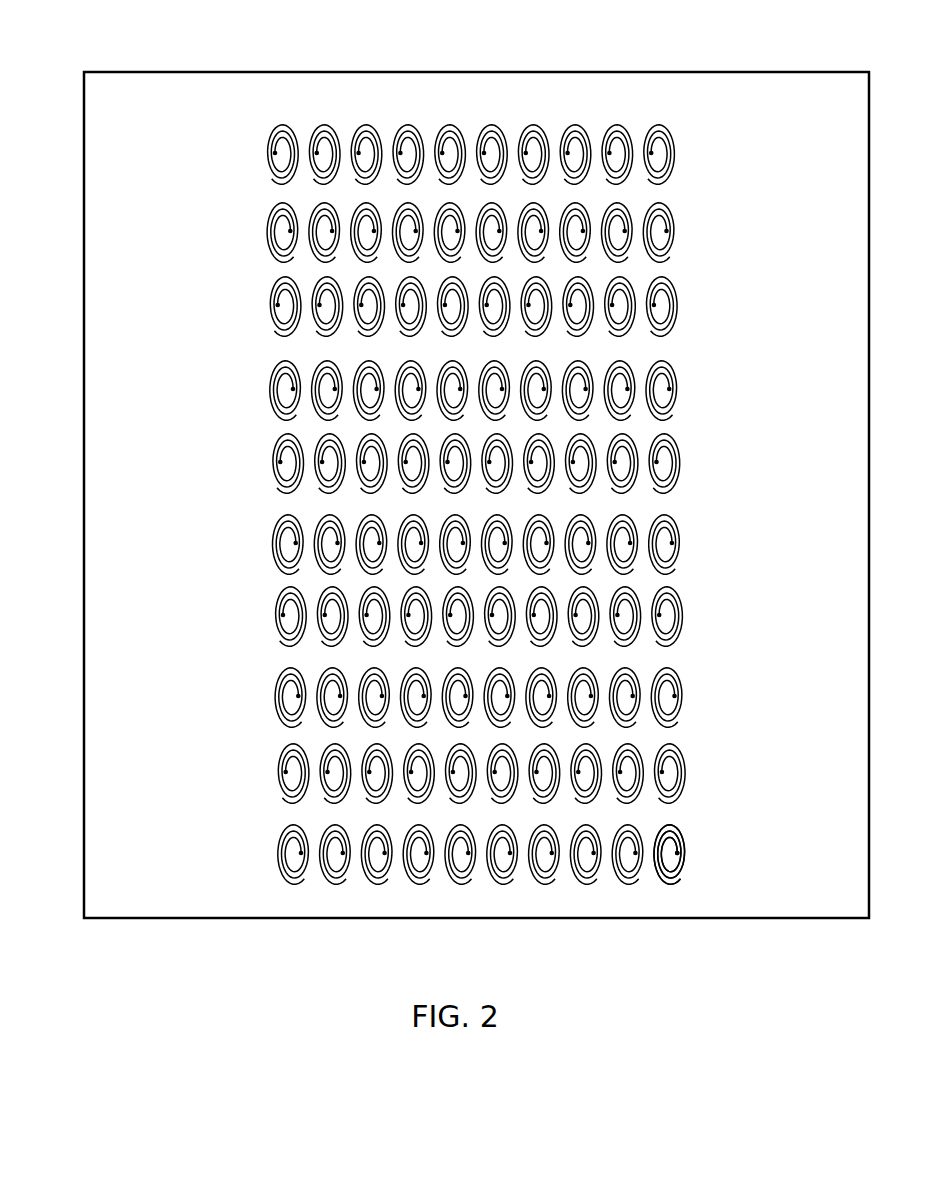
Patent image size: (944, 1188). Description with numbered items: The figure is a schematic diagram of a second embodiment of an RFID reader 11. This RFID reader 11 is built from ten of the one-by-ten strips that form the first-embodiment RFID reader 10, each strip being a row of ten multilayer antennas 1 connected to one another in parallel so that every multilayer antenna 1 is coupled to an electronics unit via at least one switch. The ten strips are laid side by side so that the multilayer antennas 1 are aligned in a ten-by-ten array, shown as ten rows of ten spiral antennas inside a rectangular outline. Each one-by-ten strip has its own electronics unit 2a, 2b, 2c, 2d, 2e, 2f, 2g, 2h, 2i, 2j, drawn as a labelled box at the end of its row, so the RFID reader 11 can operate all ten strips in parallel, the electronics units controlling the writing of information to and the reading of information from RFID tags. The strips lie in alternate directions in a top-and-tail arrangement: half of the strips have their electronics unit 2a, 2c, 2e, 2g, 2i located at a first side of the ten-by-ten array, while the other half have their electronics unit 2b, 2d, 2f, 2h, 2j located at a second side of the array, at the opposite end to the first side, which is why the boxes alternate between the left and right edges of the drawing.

The multilayer antenna 1 is at (676, 886).
The RFID reader 10 is at (122, 232).
The RFID reader 11 is at (506, 71).
The electronics unit 2a is at (263, 232).
The electronics unit 2b is at (677, 153).
The electronics unit 2c is at (265, 389).
The electronics unit 2d is at (681, 304).
The electronics unit 2e is at (268, 543).
The electronics unit 2f is at (684, 460).
The electronics unit 2g is at (270, 697).
The electronics unit 2h is at (686, 614).
The electronics unit 2i is at (272, 854).
The electronics unit 2j is at (688, 769).